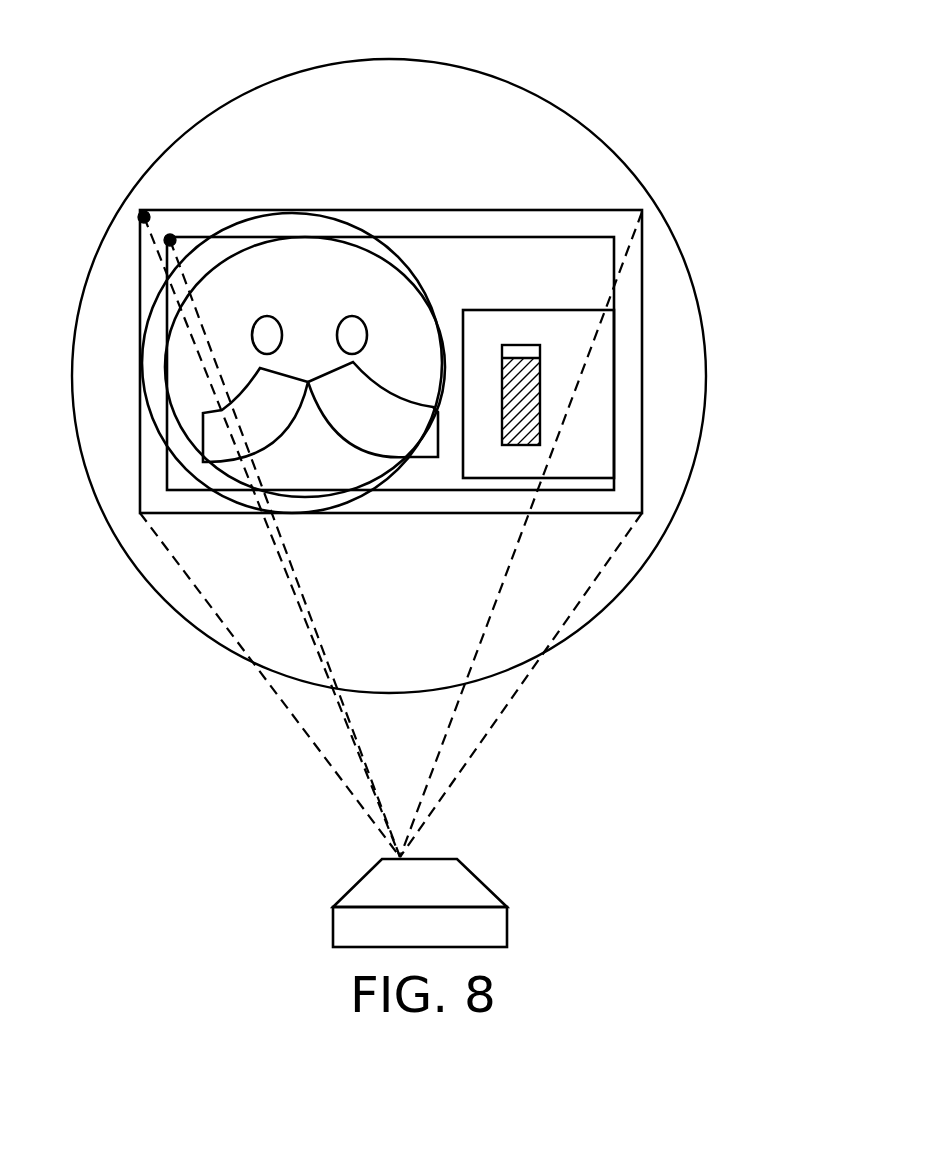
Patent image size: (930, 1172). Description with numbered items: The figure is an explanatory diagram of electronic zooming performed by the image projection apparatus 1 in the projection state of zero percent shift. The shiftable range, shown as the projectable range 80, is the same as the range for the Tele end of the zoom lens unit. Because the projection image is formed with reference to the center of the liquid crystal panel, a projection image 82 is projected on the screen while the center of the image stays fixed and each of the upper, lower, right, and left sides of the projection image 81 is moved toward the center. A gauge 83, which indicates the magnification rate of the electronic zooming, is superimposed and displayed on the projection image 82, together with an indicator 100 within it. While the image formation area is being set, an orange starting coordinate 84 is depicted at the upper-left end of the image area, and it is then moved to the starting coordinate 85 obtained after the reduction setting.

The projector device 1 is at (462, 892).
The projectable range 80 is at (625, 575).
The projection image 81 is at (556, 212).
The projection image 82 is at (405, 237).
The gauge 83 is at (595, 400).
The starting coordinate 84 is at (144, 214).
The starting coordinate 85 is at (170, 236).
The battery indicator 100 is at (550, 388).